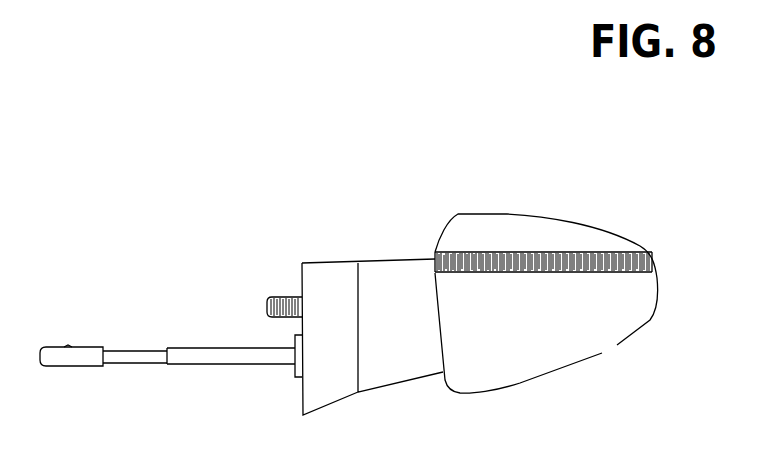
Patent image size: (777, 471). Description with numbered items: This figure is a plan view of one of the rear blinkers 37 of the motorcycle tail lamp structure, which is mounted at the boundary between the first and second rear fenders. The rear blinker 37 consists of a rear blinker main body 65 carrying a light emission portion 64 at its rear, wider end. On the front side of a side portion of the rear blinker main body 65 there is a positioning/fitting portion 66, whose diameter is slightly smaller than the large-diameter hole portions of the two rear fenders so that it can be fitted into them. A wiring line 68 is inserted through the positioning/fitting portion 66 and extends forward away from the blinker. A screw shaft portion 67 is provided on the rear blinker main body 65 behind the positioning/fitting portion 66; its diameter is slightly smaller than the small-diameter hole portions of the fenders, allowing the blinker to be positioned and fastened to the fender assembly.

The rear blinker 37 is at (619, 206).
The light emission portion 64 is at (517, 232).
The rear blinker main body 65 is at (405, 378).
The positioning/fitting portion 66 is at (293, 376).
The screw shaft portion 67 is at (283, 297).
The wiring line 68 is at (182, 350).